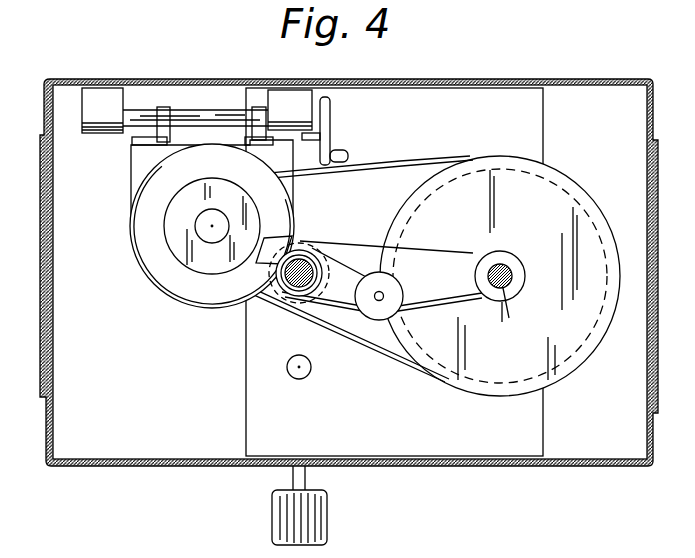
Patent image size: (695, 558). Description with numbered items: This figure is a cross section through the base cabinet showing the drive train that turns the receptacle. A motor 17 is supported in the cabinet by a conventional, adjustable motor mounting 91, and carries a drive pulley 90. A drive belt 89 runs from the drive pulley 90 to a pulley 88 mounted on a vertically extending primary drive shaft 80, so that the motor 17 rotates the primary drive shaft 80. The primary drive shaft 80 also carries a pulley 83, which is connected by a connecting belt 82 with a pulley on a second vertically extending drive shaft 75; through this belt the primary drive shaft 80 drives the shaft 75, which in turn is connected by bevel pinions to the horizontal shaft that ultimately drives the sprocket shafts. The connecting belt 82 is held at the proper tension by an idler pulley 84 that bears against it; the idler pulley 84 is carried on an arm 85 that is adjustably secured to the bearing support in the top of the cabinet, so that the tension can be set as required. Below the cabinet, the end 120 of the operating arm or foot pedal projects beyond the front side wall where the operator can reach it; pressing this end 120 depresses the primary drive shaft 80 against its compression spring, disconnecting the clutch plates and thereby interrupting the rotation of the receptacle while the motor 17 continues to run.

The motor 17 is at (185, 240).
The vertically extending drive shaft 75 is at (267, 298).
The primary drive shaft 80 is at (512, 316).
The connecting belt 82 is at (428, 250).
The pulley 83 is at (525, 277).
The idler pulley 84 is at (371, 268).
The arm 85 is at (327, 243).
The pulley 88 is at (570, 188).
The drive belt 89 is at (366, 346).
The drive pulley 90 is at (183, 262).
The adjustable motor mounting 91 is at (135, 122).
The end of foot pedal 120 is at (272, 515).